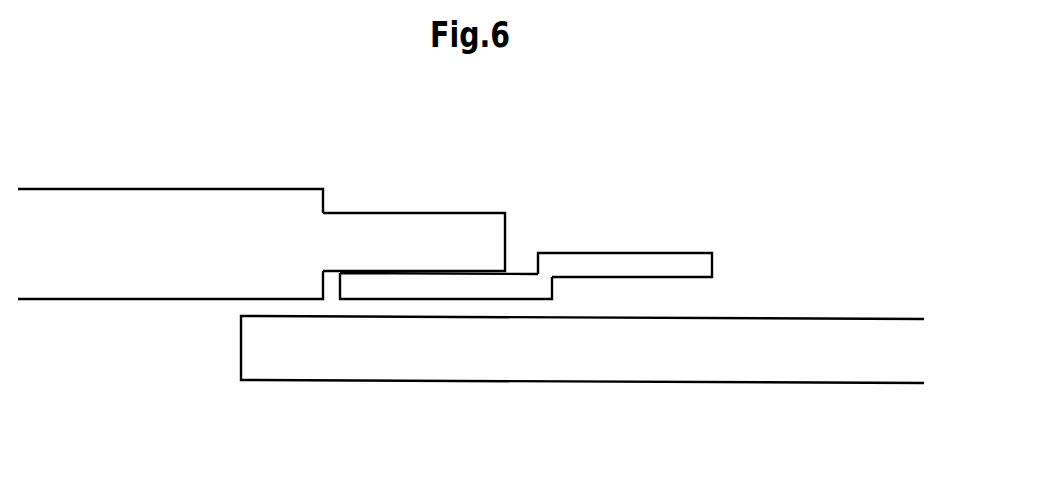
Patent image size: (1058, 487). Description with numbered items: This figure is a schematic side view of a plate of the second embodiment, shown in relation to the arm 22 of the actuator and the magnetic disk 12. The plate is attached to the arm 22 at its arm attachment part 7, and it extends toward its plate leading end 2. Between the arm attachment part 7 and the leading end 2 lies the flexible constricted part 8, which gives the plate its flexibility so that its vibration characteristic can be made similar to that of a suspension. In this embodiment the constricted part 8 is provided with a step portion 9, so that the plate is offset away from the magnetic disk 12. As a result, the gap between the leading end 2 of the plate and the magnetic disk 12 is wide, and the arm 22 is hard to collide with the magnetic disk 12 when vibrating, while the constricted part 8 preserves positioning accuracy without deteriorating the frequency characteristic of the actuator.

The arm 22 is at (170, 200).
The arm attachment part 7 is at (383, 212).
The constricted part 8 is at (513, 288).
The step portion 9 is at (552, 265).
The plate leading end 2 is at (647, 265).
The magnetic disk 12 is at (733, 337).